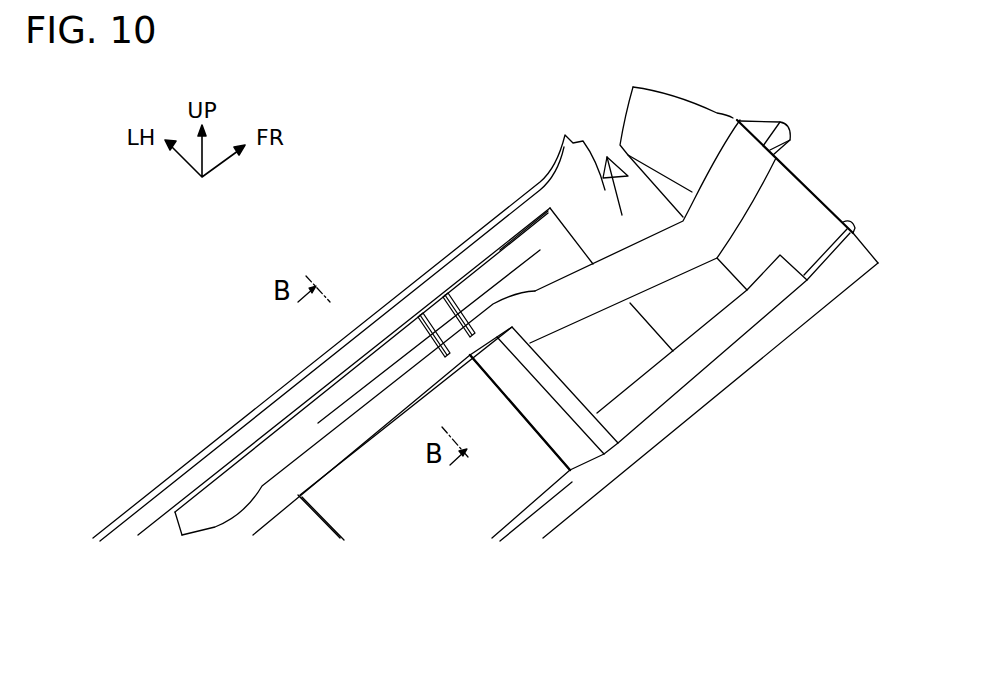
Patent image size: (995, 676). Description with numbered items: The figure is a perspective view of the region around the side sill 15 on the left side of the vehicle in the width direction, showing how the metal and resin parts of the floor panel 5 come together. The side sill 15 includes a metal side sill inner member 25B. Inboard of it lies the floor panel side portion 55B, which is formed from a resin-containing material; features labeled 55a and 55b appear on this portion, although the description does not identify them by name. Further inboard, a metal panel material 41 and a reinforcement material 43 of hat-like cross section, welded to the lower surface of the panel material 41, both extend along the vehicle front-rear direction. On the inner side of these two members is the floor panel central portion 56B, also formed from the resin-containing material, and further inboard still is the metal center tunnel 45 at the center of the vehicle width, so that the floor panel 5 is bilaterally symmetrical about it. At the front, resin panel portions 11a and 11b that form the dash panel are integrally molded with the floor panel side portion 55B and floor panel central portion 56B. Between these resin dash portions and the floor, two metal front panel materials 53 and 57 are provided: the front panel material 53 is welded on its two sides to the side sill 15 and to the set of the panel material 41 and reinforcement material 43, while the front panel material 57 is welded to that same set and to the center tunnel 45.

The floor panel 5 is at (515, 477).
The resin panel portion 11a is at (662, 117).
The resin panel portion 11b is at (793, 200).
The side sill 15 is at (316, 388).
The side sill inner member 25B is at (250, 430).
The panel material 41 is at (733, 155).
The reinforcement material 43 is at (790, 130).
The center tunnel 45 is at (680, 410).
The front panel material 53 is at (601, 163).
The hook portion 55a is at (545, 262).
The floor panel side portion 55B is at (518, 283).
The engagement pins 55b is at (472, 290).
The floor panel central portion 56B is at (632, 352).
The front panel material 57 is at (698, 303).